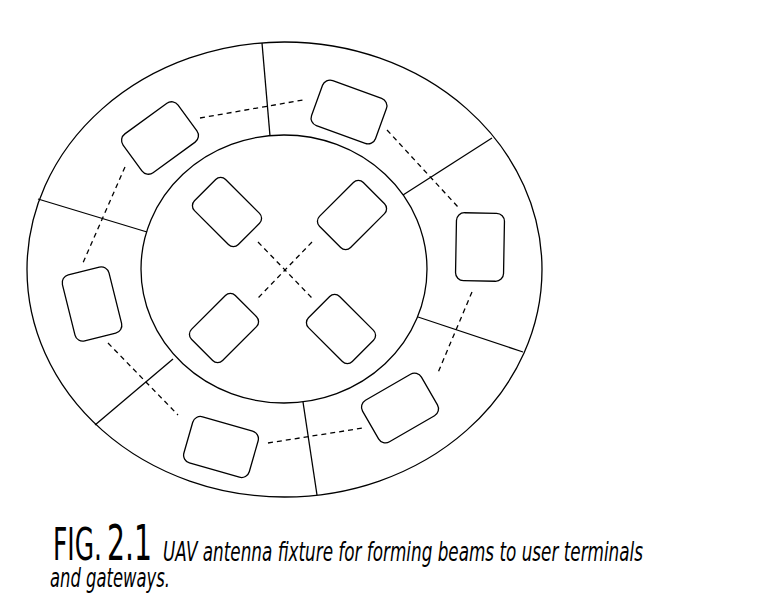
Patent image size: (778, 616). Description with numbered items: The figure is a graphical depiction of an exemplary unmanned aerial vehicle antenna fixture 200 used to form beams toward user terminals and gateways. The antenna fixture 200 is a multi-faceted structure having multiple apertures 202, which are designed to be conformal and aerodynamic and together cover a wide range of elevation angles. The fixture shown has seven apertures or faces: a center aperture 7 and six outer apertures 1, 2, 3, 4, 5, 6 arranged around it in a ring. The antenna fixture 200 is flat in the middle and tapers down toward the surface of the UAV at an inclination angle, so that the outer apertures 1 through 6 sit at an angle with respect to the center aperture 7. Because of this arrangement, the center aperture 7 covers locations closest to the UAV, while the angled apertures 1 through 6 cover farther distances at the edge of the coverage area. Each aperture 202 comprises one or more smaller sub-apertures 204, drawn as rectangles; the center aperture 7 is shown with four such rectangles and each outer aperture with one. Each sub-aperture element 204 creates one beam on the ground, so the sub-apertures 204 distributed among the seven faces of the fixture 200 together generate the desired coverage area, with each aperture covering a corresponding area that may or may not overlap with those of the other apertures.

The UAV antenna fixture 200 is at (443, 35).
The aperture 202 is at (515, 167).
The sub-aperture element 204 is at (503, 250).
The aperture 1 is at (210, 447).
The aperture 2 is at (395, 421).
The aperture 3 is at (568, 255).
The aperture 4 is at (369, 112).
The aperture 5 is at (175, 118).
The aperture 6 is at (91, 243).
The center aperture 7 is at (288, 271).